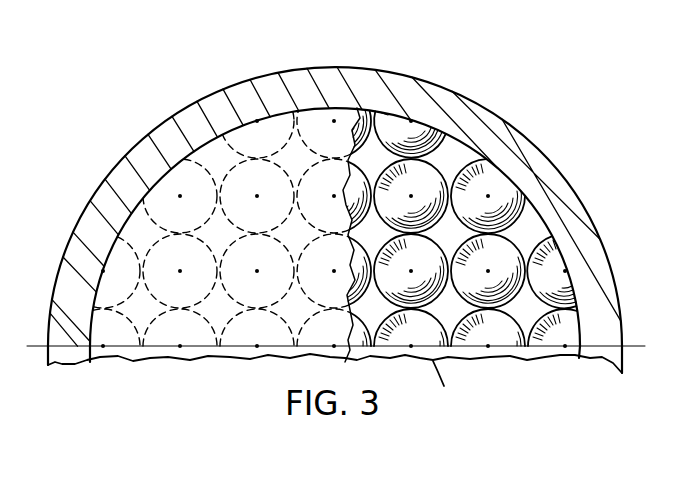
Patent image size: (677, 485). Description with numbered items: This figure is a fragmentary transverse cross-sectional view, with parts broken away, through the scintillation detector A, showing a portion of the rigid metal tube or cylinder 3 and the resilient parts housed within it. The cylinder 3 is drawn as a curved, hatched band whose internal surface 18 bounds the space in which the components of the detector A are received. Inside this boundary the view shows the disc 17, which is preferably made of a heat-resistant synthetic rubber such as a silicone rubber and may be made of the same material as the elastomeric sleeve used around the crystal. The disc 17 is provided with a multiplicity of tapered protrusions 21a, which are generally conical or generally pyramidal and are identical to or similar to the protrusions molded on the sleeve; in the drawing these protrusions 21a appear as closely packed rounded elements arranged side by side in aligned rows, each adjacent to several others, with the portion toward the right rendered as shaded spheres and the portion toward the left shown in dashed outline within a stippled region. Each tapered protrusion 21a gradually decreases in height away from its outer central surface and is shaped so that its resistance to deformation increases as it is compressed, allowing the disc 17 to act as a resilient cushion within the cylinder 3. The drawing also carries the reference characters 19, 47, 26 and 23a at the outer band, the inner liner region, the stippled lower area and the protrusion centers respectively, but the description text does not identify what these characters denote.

The scintillation detector A is at (400, 64).
The outer shell 19 is at (190, 105).
The rigid metal tube or cylinder 3 is at (558, 188).
The inner liner 47 is at (566, 263).
The disc 17 is at (533, 312).
The filler matrix 26 is at (241, 333).
The internal surface of the cylinder 18 is at (430, 129).
The tapered protrusions 21a is at (504, 188).
The sphere centers 23a is at (488, 271).